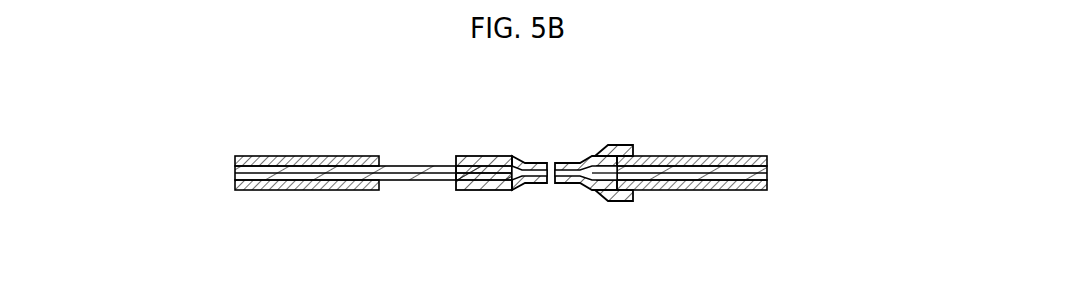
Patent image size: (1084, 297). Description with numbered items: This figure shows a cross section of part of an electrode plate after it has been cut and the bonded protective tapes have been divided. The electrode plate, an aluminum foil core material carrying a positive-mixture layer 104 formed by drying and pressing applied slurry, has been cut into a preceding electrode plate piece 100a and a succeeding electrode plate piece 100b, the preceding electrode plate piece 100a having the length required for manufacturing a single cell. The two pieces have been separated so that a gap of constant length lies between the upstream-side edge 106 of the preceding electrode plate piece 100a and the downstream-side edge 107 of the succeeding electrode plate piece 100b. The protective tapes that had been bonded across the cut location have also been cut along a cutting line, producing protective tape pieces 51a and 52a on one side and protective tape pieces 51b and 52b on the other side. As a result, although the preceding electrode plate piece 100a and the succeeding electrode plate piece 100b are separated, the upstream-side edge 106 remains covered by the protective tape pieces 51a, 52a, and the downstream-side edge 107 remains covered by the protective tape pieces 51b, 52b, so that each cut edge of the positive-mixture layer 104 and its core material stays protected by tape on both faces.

The positive-mixture layer 104 is at (298, 156).
The preceding electrode plate piece 100a is at (418, 140).
The succeeding electrode plate piece 100b is at (660, 140).
The upstream-side edge 106 is at (511, 190).
The downstream-side edge 107 is at (594, 191).
The protective tape piece 51a is at (537, 175).
The protective tape piece 51b is at (586, 175).
The protective tape piece 52a is at (528, 191).
The protective tape piece 52b is at (572, 191).